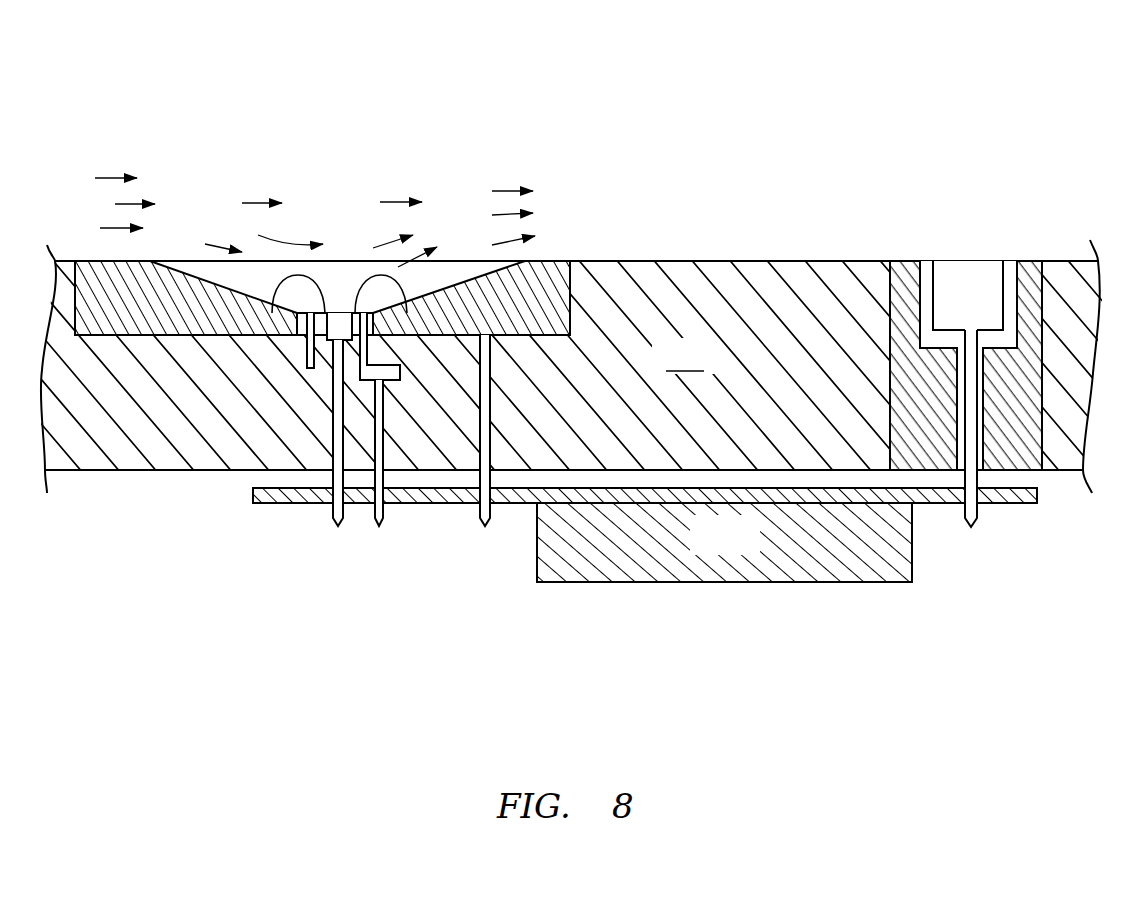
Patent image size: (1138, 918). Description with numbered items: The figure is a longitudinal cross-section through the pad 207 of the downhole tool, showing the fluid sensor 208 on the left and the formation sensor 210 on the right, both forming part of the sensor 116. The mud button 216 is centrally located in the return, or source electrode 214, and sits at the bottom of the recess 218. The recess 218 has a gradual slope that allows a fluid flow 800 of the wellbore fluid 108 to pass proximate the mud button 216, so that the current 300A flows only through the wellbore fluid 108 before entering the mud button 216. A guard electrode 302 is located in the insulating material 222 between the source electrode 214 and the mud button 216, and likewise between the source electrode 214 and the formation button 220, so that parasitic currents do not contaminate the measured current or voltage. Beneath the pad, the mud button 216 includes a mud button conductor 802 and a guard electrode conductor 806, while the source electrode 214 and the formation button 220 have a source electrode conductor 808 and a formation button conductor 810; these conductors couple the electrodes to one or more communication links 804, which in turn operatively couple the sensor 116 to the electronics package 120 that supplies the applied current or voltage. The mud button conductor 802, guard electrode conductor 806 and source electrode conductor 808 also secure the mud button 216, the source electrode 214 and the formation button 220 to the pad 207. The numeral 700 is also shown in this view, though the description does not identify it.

The wellbore fluid 108 is at (101, 216).
The sensor 116 is at (544, 98).
The electronics package 120 is at (706, 551).
The pad 207 is at (1065, 262).
The fluid sensor 208 is at (295, 160).
The formation sensor 210 is at (952, 148).
The source electrode 214 is at (553, 260).
The mud button 216 is at (343, 312).
The recess 218 is at (238, 292).
The formation button 220 is at (977, 262).
The insulating material 222 is at (702, 262).
The current 300A is at (327, 309).
The guard electrode 302 is at (898, 262).
The transducer 700 is at (198, 275).
The fluid flow 800 is at (100, 178).
The mud button conductor 802 is at (340, 528).
The communication links 804 is at (1037, 497).
The guard electrode conductor 806 is at (380, 528).
The source electrode conductor 808 is at (486, 528).
The formation button conductor 810 is at (970, 403).